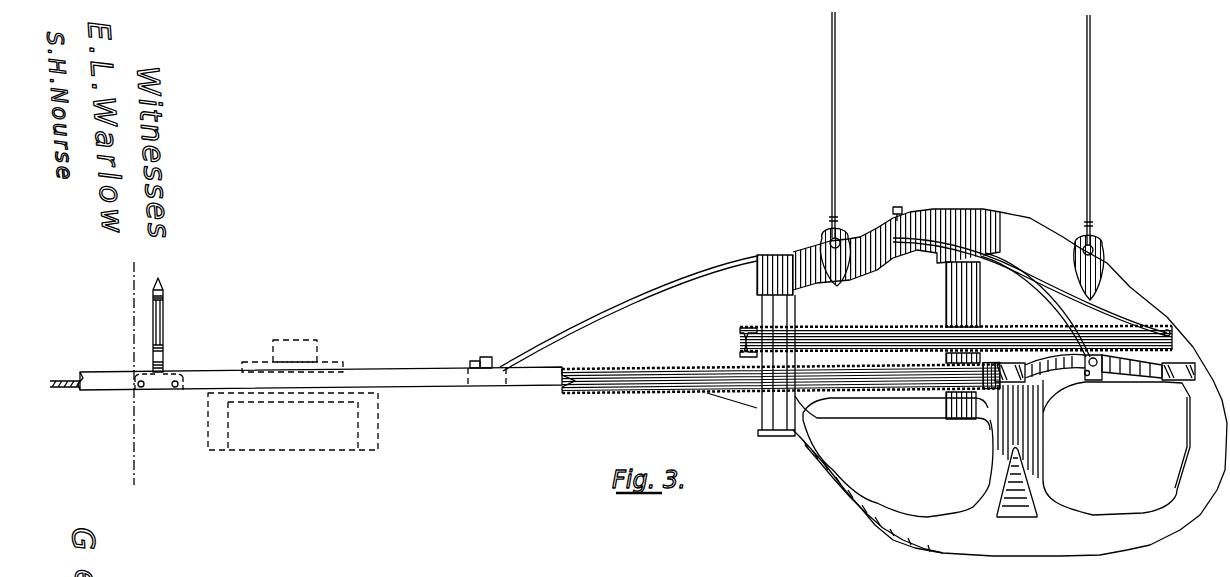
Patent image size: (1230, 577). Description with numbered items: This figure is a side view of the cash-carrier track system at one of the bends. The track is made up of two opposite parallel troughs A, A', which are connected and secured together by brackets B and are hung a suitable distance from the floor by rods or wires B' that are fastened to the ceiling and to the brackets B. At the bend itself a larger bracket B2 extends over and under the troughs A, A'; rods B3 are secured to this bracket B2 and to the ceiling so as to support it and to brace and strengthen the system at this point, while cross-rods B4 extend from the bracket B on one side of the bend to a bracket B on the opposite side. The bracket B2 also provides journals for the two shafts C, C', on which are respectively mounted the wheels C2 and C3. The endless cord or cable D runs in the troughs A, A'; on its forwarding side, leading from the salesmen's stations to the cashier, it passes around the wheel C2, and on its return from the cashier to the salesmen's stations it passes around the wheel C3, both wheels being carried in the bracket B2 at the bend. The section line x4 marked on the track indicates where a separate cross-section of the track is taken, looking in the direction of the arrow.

The trough A is at (892, 420).
The trough A' is at (1148, 381).
The bracket B is at (631, 349).
The rod or wire B' is at (171, 267).
The bracket B2 is at (1010, 384).
The rod B3 is at (836, 65).
The cross-rod B4 is at (833, 304).
The shaft C is at (951, 340).
The shaft C' is at (745, 331).
The wheel C2 is at (956, 325).
The wheel C3 is at (667, 396).
The endless cord or cable D is at (1030, 377).
The section line x4 is at (124, 327).